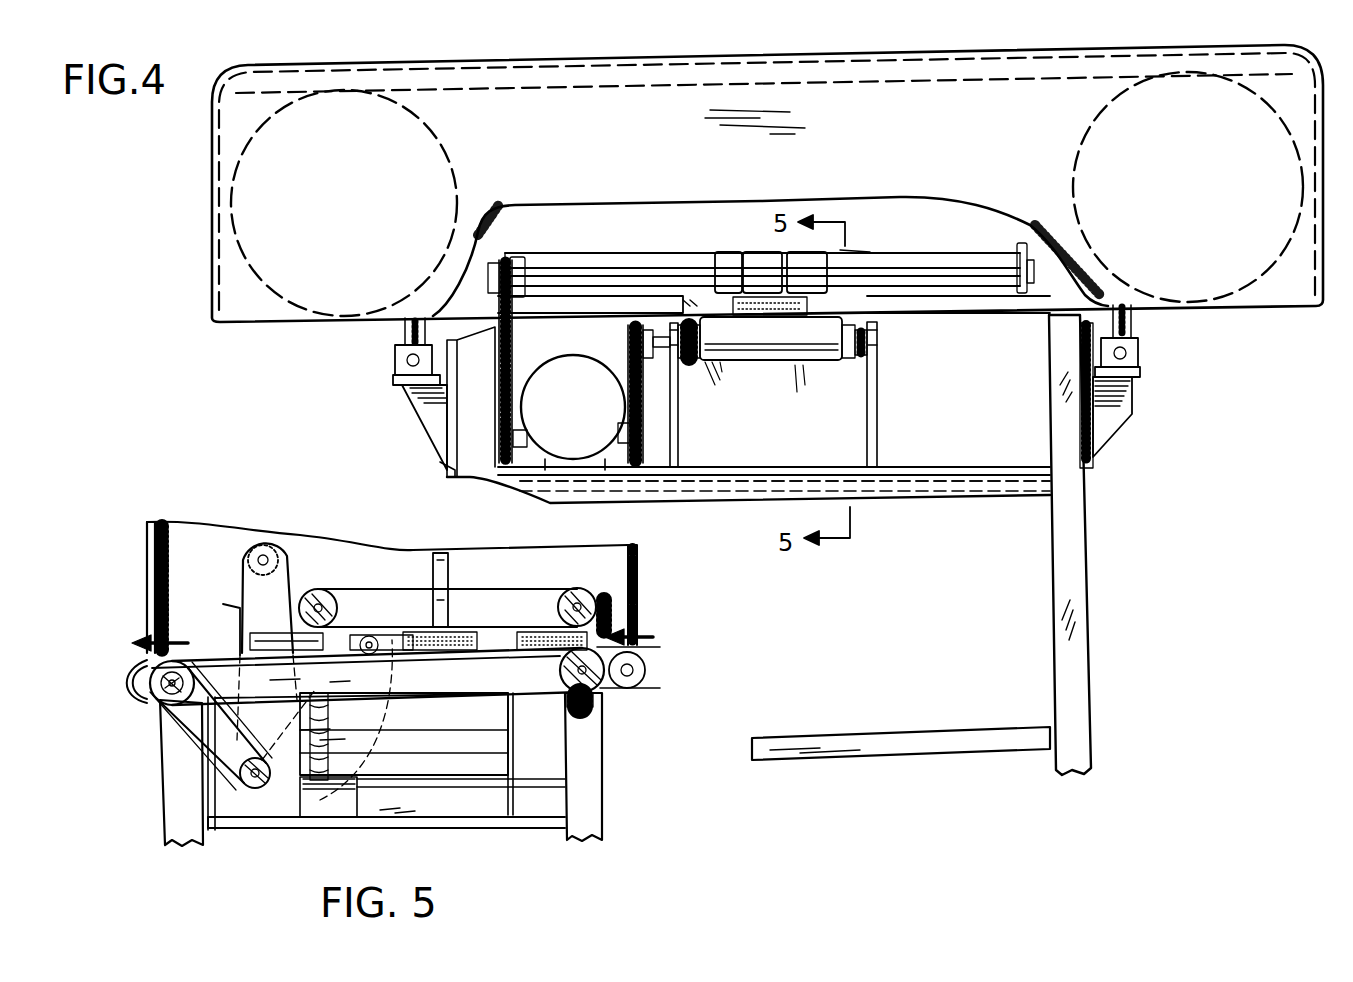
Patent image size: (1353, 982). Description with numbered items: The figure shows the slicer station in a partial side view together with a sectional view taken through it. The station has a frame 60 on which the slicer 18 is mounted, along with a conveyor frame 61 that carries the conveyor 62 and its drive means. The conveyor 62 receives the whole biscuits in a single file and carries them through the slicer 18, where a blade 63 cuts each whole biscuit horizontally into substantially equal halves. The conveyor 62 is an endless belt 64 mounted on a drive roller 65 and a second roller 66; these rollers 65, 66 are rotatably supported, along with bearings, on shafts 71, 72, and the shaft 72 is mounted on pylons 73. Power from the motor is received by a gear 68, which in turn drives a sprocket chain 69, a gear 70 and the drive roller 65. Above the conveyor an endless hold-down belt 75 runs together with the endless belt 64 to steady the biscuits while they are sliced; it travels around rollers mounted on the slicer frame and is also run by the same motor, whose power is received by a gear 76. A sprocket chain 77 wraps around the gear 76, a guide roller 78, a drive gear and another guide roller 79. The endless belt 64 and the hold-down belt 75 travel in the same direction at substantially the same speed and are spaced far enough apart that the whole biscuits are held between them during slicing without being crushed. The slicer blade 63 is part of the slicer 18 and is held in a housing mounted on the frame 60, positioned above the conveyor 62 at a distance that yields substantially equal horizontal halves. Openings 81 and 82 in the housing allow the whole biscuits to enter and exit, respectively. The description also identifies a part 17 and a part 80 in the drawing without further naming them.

In FIG. 4, the support tray 17 is at (202, 214).
In FIG. 4, the slicer 18 is at (238, 115).
In FIG. 4, the housing 80 is at (580, 153).
In FIG. 5, the housing 80 is at (147, 548).
In FIG. 4, the endless hold-down belt 75 is at (720, 262).
In FIG. 5, the endless hold-down belt 75 is at (523, 584).
In FIG. 4, the sprocket chain 77 is at (447, 470).
In FIG. 5, the sprocket chain 77 is at (223, 604).
In FIG. 4, the gear 76 is at (452, 472).
In FIG. 4, the gear 70 is at (628, 340).
In FIG. 4, the conveyor 62 is at (820, 350).
In FIG. 5, the conveyor 62 is at (460, 725).
In FIG. 4, the pylons 73 is at (677, 447).
In FIG. 4, the sprocket chain 69 is at (645, 440).
In FIG. 5, the sprocket chain 69 is at (222, 752).
In FIG. 4, the frame 60 is at (1078, 606).
In FIG. 5, the frame 60 is at (580, 793).
In FIG. 4, the conveyor frame 61 is at (998, 488).
In FIG. 5, the conveyor frame 61 is at (532, 807).
In FIG. 4, the blade 63 is at (877, 337).
In FIG. 5, the blade 63 is at (448, 568).
In FIG. 5, the opening 82 is at (150, 640).
In FIG. 5, the opening 81 is at (640, 632).
In FIG. 5, the guide roller 78 is at (281, 553).
In FIG. 5, the guide roller 79 is at (375, 640).
In FIG. 5, the endless belt 64 is at (552, 698).
In FIG. 5, the shaft 71 is at (155, 705).
In FIG. 5, the roller 66 is at (597, 687).
In FIG. 5, the gear 68 is at (252, 792).
In FIG. 5, the drive roller 65 is at (162, 713).
In FIG. 5, the shaft 72 is at (600, 736).